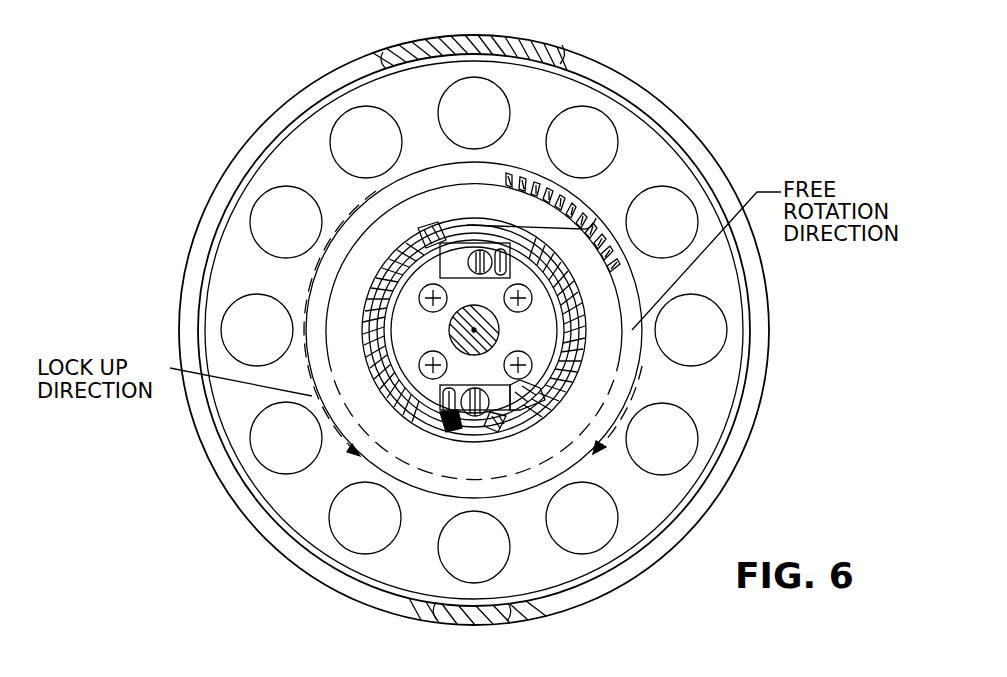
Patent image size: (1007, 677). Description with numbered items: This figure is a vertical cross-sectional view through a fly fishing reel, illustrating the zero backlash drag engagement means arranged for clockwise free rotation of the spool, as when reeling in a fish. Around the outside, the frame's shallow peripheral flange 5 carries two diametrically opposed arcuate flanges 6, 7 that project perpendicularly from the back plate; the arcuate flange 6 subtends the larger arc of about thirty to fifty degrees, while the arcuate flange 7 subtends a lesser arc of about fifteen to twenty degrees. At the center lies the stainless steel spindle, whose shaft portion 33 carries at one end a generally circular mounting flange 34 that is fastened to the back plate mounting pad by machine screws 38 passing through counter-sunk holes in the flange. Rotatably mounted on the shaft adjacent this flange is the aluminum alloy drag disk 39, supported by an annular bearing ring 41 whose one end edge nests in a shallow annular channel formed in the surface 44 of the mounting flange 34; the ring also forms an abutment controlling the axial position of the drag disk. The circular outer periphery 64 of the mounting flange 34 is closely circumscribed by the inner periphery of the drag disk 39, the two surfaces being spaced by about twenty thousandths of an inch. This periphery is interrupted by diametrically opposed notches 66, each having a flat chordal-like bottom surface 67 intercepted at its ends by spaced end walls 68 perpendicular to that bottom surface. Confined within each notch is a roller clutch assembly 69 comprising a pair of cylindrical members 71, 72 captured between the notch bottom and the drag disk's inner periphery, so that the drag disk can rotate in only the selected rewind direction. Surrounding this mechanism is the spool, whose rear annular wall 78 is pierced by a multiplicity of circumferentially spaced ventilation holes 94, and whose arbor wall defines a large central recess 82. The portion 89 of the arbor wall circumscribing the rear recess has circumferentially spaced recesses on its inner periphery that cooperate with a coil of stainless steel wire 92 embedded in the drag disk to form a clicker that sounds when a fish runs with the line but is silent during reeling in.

The peripheral flange 5 is at (665, 117).
The arcuate flange 6 is at (490, 42).
The arcuate flange 7 is at (490, 622).
The shaft portion 33 is at (500, 330).
The mounting flange 34 is at (429, 345).
The machine screws 38 is at (530, 298).
The drag disk 39 is at (483, 477).
The annular bearing ring 41 is at (540, 386).
The surface of the mounting flange 44 is at (548, 261).
The circular outer periphery 64 is at (563, 362).
The notches 66 is at (453, 243).
The bottom surface 67 is at (423, 258).
The end walls 68 is at (498, 428).
The roller clutch assembly 69 is at (448, 420).
The cylindrical member 71 is at (479, 250).
The cylindrical member 72 is at (577, 235).
The rear annular wall 78 is at (225, 265).
The central recess 82 is at (330, 333).
The portion of the arbor wall 89 is at (580, 207).
The coil of stainless steel wire 92 is at (545, 212).
The holes 94 is at (674, 204).